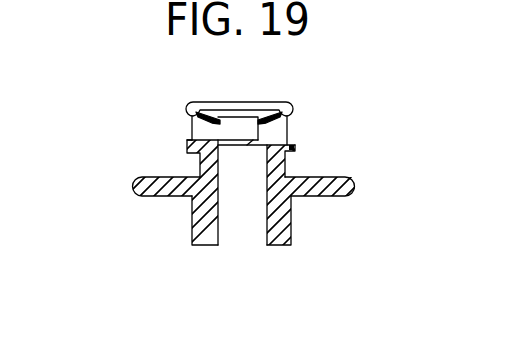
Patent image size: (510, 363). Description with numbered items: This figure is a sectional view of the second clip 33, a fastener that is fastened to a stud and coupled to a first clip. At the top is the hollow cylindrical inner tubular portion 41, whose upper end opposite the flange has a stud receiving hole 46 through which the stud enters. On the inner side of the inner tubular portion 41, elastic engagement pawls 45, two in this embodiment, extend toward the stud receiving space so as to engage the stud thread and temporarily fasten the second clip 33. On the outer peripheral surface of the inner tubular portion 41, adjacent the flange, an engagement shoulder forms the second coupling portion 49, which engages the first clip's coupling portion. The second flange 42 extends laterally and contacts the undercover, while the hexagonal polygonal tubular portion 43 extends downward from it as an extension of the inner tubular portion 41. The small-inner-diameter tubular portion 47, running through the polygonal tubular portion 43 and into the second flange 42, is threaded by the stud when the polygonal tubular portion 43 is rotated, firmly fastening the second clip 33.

The second clip 33 is at (357, 109).
The inner tubular portion 41 is at (200, 163).
The second flange 42 is at (132, 189).
The polygonal tubular portion 43 is at (192, 240).
The engagement pawls 45 is at (196, 117).
The stud receiving hole 46 is at (245, 116).
The small-inner-diameter tubular portion 47 is at (262, 228).
The second coupling portion 49 is at (291, 151).